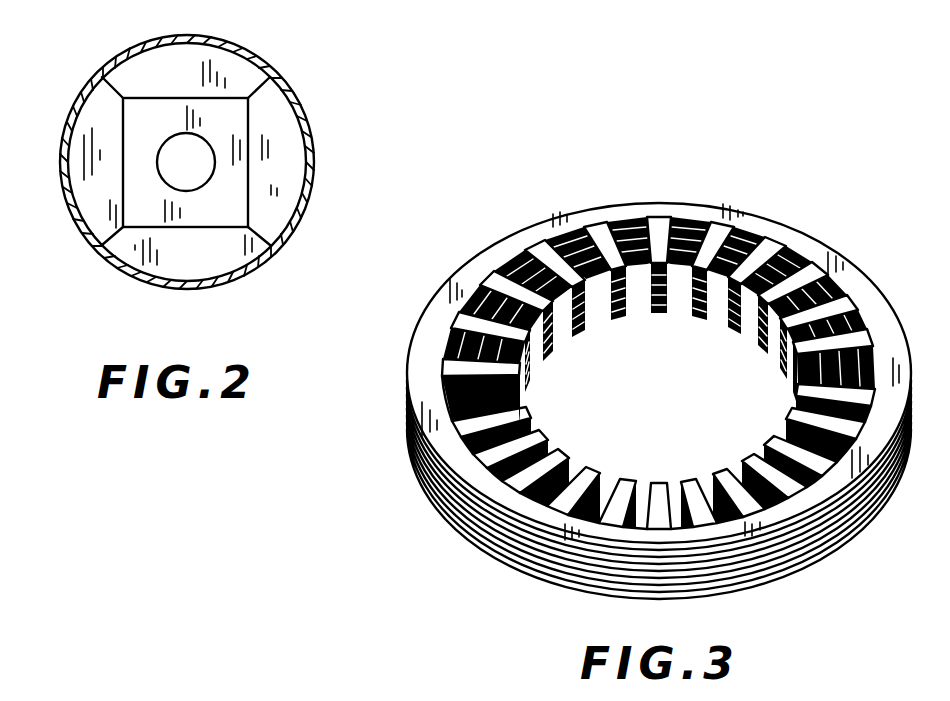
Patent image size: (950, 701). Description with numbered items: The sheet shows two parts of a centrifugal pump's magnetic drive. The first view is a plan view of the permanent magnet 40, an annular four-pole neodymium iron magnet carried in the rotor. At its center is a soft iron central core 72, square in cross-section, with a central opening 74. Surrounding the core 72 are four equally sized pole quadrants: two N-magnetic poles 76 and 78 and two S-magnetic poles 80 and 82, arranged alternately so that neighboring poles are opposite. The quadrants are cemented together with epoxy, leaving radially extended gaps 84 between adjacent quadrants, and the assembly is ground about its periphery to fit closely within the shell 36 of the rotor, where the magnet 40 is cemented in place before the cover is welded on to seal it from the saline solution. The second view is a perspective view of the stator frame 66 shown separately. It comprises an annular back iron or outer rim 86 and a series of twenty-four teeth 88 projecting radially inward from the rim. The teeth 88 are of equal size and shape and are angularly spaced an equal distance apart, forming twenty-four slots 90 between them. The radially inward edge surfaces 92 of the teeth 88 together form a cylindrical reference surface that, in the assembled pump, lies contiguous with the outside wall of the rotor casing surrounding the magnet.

In FIG. 2, the shell 36 is at (110, 259).
In FIG. 2, the permanent magnet 40 is at (268, 117).
In FIG. 2, the central core 72 is at (146, 126).
In FIG. 2, the central opening 74 is at (187, 183).
In FIG. 2, the N-magnetic pole 76 is at (218, 72).
In FIG. 2, the N-magnetic pole 78 is at (203, 258).
In FIG. 2, the S-magnetic pole 80 is at (272, 170).
In FIG. 2, the S-magnetic pole 82 is at (98, 208).
In FIG. 2, the radially extended gaps 84 is at (127, 54).
In FIG. 3, the stator frame 66 is at (500, 493).
In FIG. 3, the outer rim 86 is at (802, 243).
In FIG. 3, the teeth 88 is at (525, 272).
In FIG. 3, the slots 90 is at (691, 216).
In FIG. 3, the radially inward edge surfaces 92 is at (617, 306).